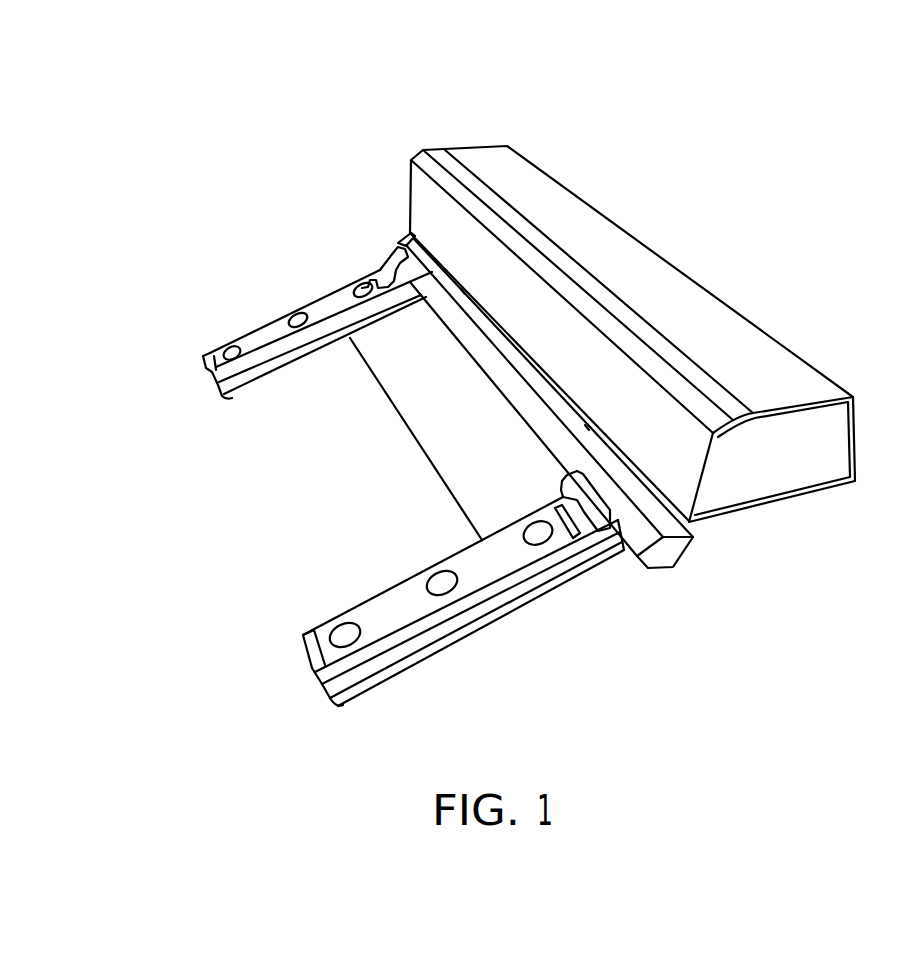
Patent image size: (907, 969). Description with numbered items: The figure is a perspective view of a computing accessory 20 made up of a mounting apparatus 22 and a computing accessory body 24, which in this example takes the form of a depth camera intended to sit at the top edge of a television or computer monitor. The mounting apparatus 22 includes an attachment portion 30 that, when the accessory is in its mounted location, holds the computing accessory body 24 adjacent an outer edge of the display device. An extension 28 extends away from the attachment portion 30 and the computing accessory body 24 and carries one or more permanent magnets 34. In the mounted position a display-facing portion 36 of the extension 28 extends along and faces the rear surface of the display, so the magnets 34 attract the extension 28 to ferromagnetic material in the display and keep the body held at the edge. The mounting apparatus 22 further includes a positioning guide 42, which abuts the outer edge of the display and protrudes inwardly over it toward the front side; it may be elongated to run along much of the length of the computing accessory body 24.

The computing accessory 20 is at (632, 303).
The mounting apparatus 22 is at (279, 253).
The computing accessory body 24 is at (479, 153).
The extension 28 is at (463, 598).
The attachment portion 30 is at (483, 353).
The permanent magnets 34 is at (538, 523).
The display-facing portion 36 is at (393, 613).
The positioning guide 42 is at (587, 541).